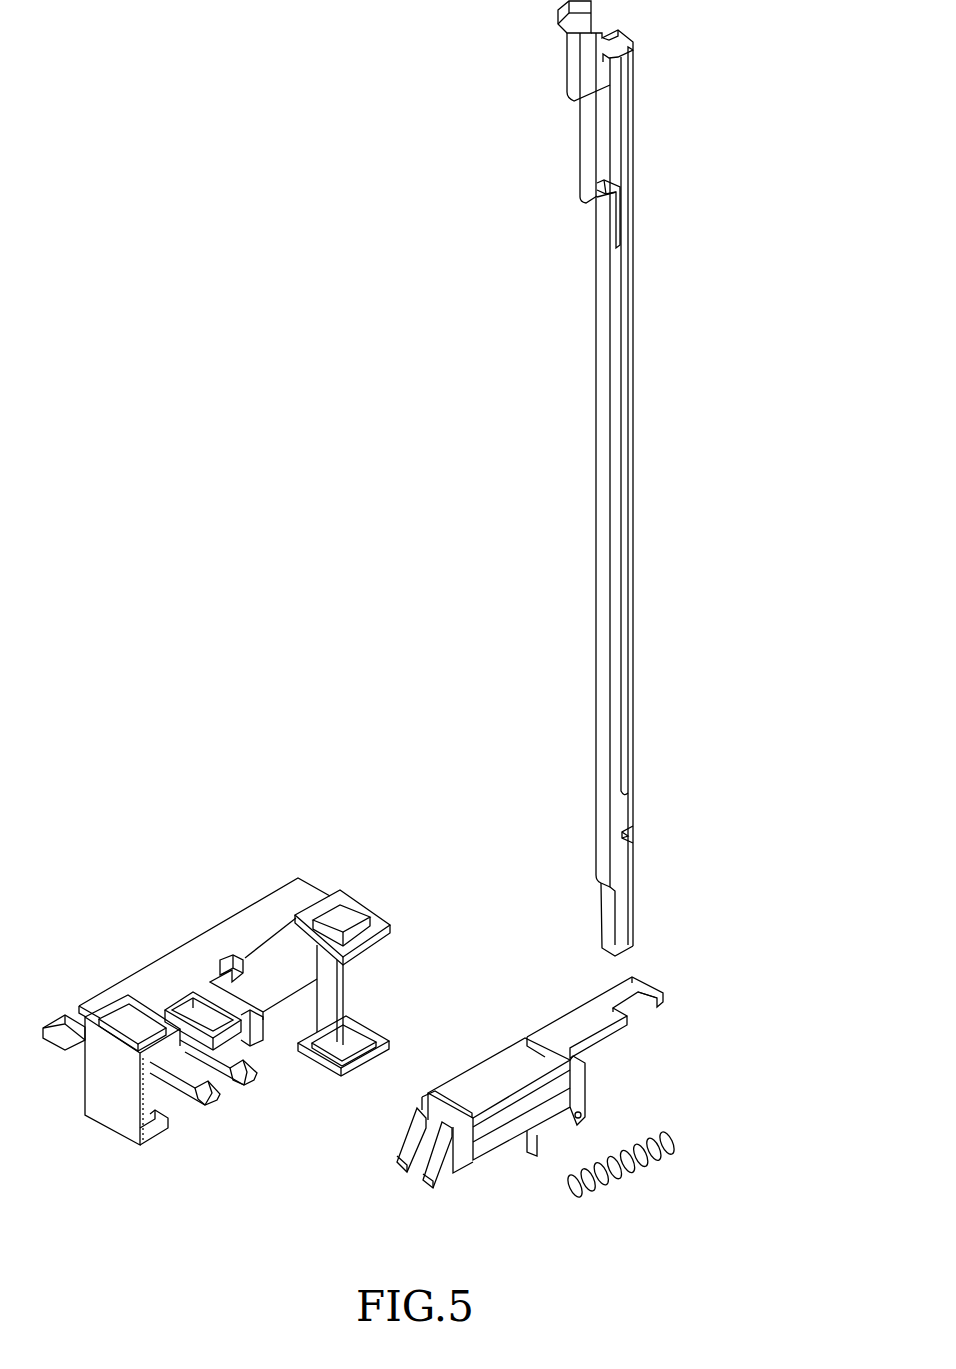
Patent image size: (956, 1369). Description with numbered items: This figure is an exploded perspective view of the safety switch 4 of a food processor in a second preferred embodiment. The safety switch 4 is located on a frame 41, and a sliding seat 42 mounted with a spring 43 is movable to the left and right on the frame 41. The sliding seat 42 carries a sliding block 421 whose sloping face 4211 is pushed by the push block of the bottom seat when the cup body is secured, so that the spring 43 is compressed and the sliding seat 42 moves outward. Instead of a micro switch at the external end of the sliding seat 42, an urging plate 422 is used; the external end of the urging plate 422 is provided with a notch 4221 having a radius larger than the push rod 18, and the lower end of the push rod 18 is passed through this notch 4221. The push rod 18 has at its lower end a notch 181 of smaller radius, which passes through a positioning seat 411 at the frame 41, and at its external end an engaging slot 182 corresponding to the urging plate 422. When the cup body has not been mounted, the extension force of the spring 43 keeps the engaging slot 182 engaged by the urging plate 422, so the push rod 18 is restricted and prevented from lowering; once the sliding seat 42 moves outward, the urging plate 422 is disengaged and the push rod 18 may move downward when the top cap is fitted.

The push rod 18 is at (595, 473).
The notch 181 is at (603, 879).
The engaging slot 182 is at (634, 830).
The safety switch 4 is at (257, 961).
The frame 41 is at (175, 965).
The positioning seat 411 is at (375, 919).
The sliding seat 42 is at (530, 1091).
The sliding block 421 is at (408, 1172).
The sloping face 4211 is at (408, 1138).
The urging plate 422 is at (660, 993).
The notch 4221 is at (636, 1013).
The spring 43 is at (633, 1175).